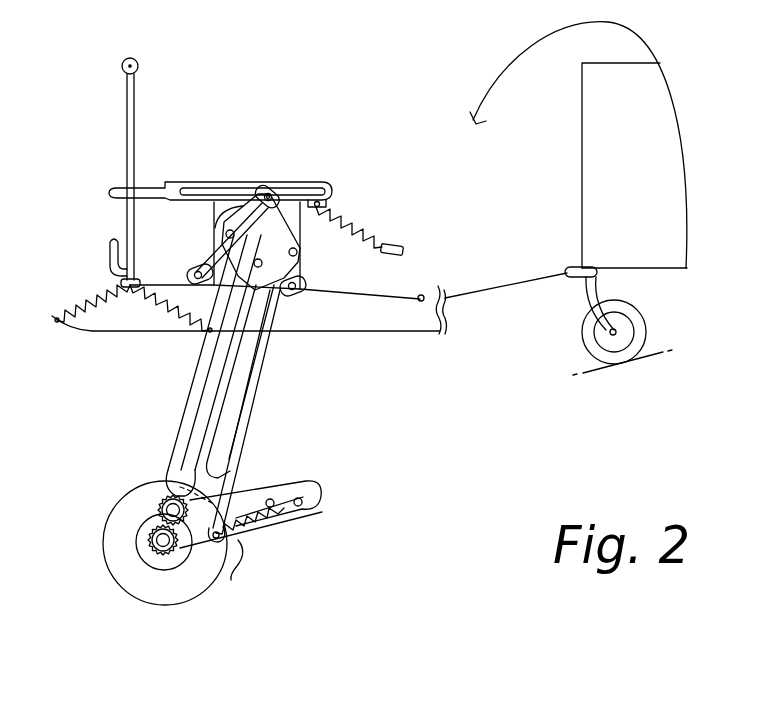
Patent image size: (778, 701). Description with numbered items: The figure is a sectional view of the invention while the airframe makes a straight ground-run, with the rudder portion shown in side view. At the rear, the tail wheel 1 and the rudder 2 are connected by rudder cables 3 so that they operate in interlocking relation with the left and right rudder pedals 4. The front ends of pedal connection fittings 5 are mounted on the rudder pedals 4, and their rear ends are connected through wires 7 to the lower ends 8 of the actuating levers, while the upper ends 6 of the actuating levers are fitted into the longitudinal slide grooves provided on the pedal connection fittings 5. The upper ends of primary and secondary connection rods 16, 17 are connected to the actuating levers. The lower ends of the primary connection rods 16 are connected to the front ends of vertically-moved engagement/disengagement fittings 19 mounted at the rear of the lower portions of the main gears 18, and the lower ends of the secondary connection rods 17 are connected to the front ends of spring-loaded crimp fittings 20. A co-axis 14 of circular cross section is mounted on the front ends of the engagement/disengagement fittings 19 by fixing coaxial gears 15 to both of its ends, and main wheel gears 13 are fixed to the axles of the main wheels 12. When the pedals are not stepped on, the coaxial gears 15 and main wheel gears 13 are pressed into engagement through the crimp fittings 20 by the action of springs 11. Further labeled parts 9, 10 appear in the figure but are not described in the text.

The tail wheel 1 is at (640, 337).
The rudder 2 is at (660, 247).
The rudder cables 3 is at (515, 290).
The rudder pedals 4 is at (113, 250).
The pedal connection fittings 5 is at (322, 187).
The upper ends of actuating levers 6 is at (267, 188).
The wires 7 is at (213, 264).
The lower ends of actuating levers 8 is at (180, 288).
The pivot 9 is at (269, 197).
The link 10 is at (285, 298).
The springs 11 is at (97, 287).
The main wheels 12 is at (167, 592).
The main wheel gears 13 is at (177, 550).
The co-axis 14 is at (222, 550).
The coaxial gears 15 is at (165, 467).
The primary connection rods 16 is at (223, 350).
The secondary connection rods 17 is at (258, 395).
The main gears 18 is at (215, 417).
The engagement/disengagement fittings 19 is at (320, 508).
The spring-loaded crimp fittings 20 is at (280, 523).